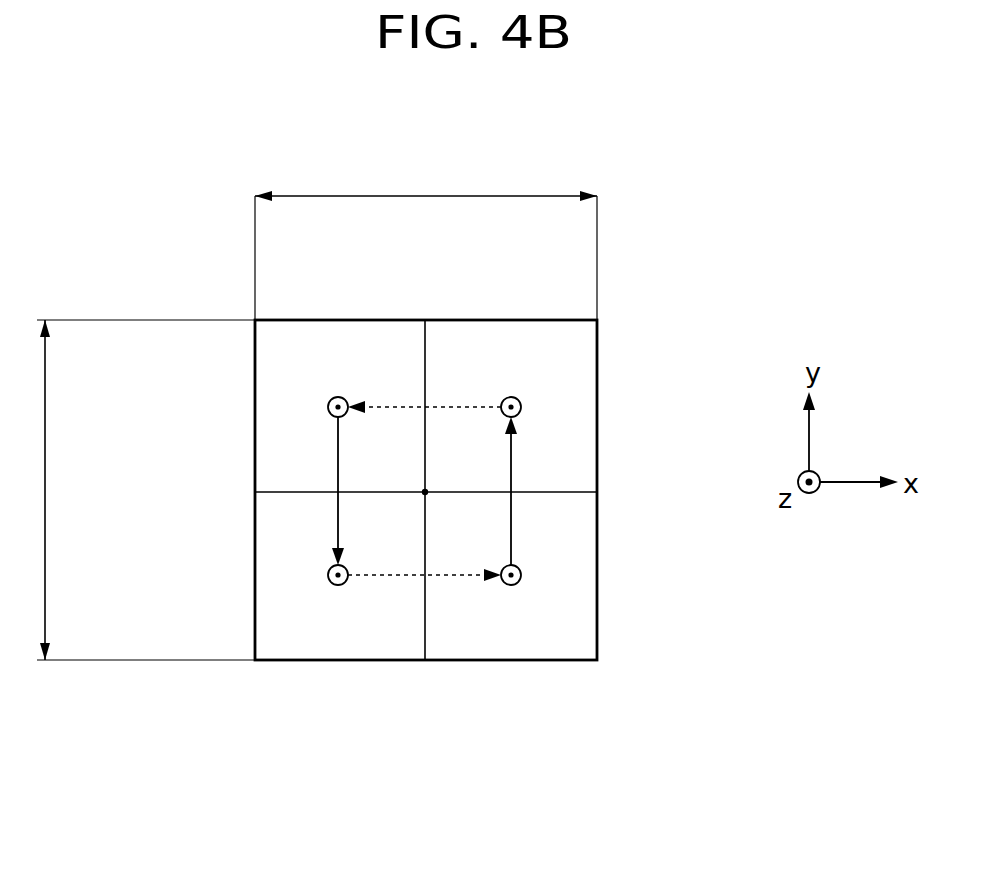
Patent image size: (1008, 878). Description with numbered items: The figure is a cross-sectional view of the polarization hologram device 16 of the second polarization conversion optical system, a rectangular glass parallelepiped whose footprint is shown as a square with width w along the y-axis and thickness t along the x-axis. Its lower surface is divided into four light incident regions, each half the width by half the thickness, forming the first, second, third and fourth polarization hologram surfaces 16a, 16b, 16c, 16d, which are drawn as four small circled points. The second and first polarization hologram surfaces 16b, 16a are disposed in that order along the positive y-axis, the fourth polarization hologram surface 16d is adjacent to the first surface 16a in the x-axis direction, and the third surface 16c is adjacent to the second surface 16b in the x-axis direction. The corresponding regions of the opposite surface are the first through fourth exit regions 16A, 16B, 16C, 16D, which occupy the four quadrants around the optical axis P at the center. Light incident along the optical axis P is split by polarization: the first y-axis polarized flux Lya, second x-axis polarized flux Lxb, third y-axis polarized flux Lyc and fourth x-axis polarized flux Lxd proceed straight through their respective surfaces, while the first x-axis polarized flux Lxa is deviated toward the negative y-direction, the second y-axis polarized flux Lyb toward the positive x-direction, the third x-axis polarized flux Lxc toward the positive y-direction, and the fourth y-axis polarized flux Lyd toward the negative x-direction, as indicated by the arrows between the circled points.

The polarization hologram device 16 is at (208, 442).
The first exit region 16A is at (282, 378).
The second exit region 16B is at (282, 570).
The third exit region 16C is at (570, 568).
The fourth exit region 16D is at (570, 358).
The first polarization hologram surface 16a is at (285, 420).
The second polarization hologram surface 16b is at (283, 602).
The third polarization hologram surface 16c is at (560, 620).
The fourth polarization hologram surface 16d is at (560, 397).
The first x-axis polarized flux Lxa is at (338, 455).
The second x-axis polarized flux Lxb is at (338, 586).
The third x-axis polarized flux Lxc is at (511, 468).
The fourth x-axis polarized flux Lxd is at (511, 397).
The first y-axis polarized flux Lya is at (338, 397).
The second y-axis polarized flux Lyb is at (380, 578).
The third y-axis polarized flux Lyc is at (511, 586).
The fourth y-axis polarized flux Lyd is at (390, 405).
The optical axis P is at (425, 492).
The thickness t is at (426, 240).
The width w is at (135, 490).